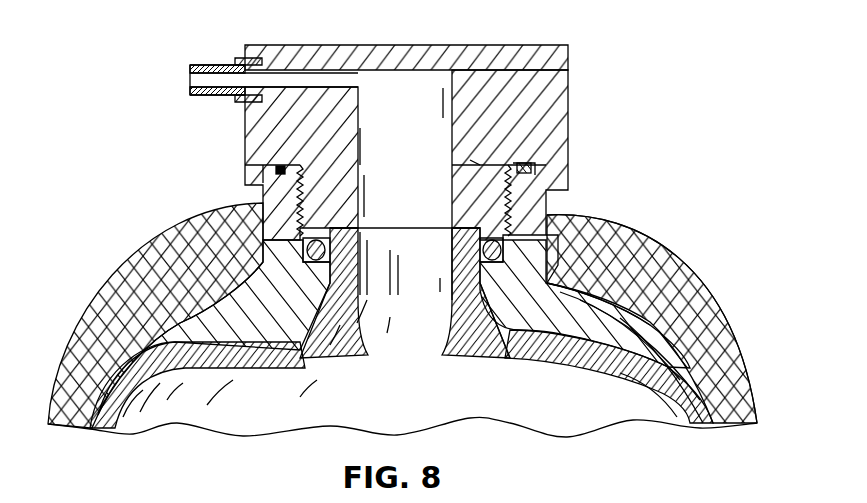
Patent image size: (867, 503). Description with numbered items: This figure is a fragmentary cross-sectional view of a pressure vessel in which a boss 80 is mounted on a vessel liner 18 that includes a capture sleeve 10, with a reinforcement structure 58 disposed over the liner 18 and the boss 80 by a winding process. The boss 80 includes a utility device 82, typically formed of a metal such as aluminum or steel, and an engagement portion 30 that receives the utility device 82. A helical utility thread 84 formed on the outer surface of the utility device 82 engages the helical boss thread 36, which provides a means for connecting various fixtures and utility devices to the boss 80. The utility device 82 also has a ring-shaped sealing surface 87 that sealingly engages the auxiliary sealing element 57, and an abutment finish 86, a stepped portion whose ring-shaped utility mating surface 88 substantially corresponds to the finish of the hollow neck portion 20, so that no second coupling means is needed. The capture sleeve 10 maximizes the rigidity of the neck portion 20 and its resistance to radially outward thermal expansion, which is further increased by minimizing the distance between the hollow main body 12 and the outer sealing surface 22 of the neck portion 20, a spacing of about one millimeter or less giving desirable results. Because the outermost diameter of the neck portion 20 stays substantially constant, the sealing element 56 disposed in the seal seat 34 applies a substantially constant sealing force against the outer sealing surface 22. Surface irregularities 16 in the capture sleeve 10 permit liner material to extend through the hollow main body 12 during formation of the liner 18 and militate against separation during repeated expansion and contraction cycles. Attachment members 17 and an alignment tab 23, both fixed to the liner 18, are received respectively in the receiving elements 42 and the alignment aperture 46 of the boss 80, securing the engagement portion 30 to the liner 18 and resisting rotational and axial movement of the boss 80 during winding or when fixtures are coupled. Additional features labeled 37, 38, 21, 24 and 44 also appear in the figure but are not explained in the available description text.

The boss 80 is at (472, 142).
The utility device 82 is at (568, 92).
The engagement portion 30 is at (566, 182).
The auxiliary sealing element 57 is at (522, 162).
The O-ring seal 37 is at (534, 166).
The sealing surface 87 is at (478, 164).
The seal 38 is at (276, 169).
The helical utility thread 84 is at (263, 205).
The helical boss thread 36 is at (548, 200).
The abutment finish 86 is at (542, 222).
The seal seat 34 is at (562, 290).
The hollow neck portion 20 is at (587, 310).
The attachment members 17 is at (616, 325).
The outer layer 24 is at (641, 345).
The reinforcement structure 58 is at (711, 332).
The outer sealing surface 22 is at (262, 257).
The sealing element 56 is at (258, 270).
The alignment tab 23 is at (242, 293).
The fluid flow direction 21 is at (380, 246).
The utility mating surface 88 is at (452, 228).
The hollow main body 12 is at (455, 242).
The surface irregularities 16 is at (458, 263).
The capture sleeve 10 is at (452, 296).
The receiving elements 42 is at (463, 320).
The alignment aperture 46 is at (313, 313).
The flared portion 44 is at (470, 340).
The vessel liner 18 is at (533, 352).